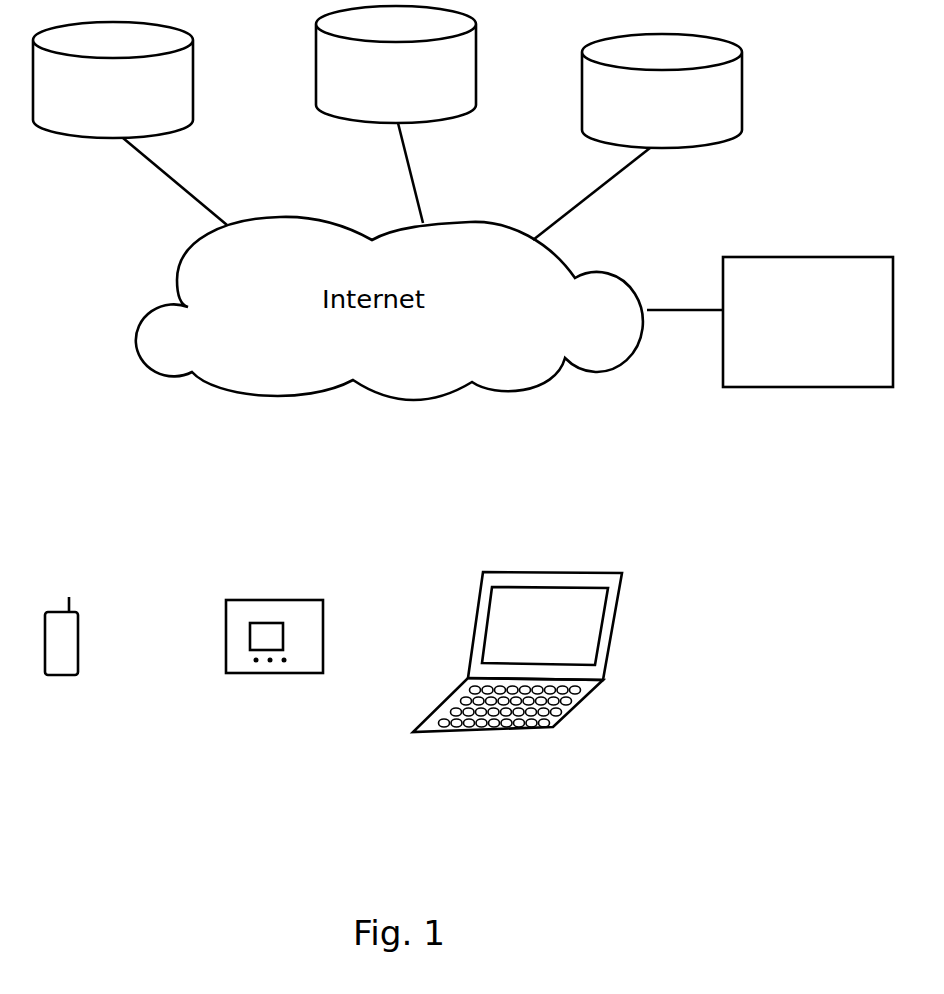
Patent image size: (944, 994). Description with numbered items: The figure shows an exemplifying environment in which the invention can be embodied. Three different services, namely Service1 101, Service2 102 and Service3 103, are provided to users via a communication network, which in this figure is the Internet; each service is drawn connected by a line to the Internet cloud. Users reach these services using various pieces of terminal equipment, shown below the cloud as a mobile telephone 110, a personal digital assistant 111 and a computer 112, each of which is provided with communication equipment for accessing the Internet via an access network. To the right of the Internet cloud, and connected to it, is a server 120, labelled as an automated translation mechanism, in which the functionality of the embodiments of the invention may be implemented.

The Service1 101 is at (193, 85).
The Service2 102 is at (476, 75).
The Service3 103 is at (742, 103).
The mobile telephone 110 is at (78, 640).
The personal digital assistant 111 is at (323, 622).
The computer 112 is at (610, 650).
The server 120 is at (818, 387).